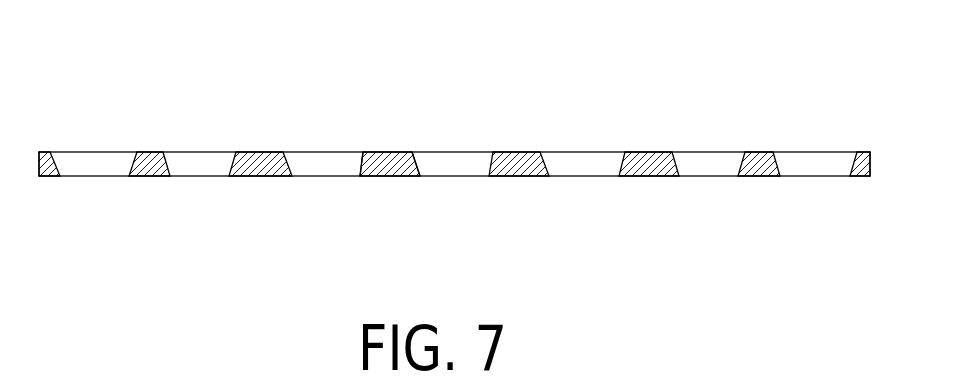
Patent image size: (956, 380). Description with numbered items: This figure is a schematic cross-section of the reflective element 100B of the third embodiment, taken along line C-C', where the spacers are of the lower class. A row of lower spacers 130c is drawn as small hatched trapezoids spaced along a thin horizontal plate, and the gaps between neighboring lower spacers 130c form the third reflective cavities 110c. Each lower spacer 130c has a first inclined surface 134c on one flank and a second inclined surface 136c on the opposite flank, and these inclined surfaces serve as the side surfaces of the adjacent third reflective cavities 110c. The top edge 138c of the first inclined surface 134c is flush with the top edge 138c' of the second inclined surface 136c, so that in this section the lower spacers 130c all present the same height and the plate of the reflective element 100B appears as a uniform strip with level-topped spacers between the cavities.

The reflective element 100B is at (94, 38).
The third reflective cavities 110c is at (713, 162).
The lower spacer 130c is at (402, 168).
The first inclined surface 134c is at (362, 167).
The second inclined surface 136c is at (420, 167).
The top edge of first inclined surface 138c is at (438, 123).
The top edge of second inclined surface 138c' is at (342, 123).